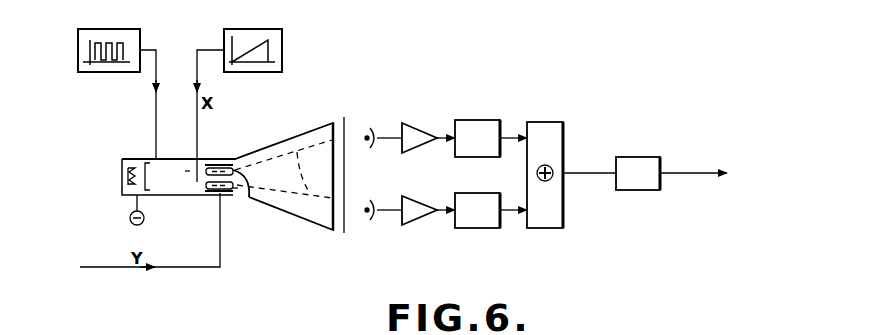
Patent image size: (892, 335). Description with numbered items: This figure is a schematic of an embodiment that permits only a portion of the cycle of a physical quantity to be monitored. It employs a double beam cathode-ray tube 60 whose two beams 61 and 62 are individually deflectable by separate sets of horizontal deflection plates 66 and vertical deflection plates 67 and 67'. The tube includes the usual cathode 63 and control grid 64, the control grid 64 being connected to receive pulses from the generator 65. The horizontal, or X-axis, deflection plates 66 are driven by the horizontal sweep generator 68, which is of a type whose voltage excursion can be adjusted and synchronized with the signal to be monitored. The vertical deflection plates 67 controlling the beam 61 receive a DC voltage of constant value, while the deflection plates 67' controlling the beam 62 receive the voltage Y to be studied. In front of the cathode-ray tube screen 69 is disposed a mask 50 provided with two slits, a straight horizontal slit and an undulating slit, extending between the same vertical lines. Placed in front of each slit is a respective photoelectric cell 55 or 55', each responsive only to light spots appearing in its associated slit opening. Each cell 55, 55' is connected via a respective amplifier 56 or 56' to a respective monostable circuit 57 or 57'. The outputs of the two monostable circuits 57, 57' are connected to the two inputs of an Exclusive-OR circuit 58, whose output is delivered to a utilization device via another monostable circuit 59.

The mask 50 is at (344, 138).
The photoelectric cell 55 is at (385, 122).
The photoelectric cell 55' is at (377, 226).
The amplifier 56 is at (491, 111).
The amplifier 56' is at (419, 242).
The monostable circuit 57 is at (439, 157).
The monostable circuit 57' is at (557, 231).
The Exclusive-OR circuit 58 is at (565, 129).
The monostable circuit 59 is at (630, 165).
The double beam cathode-ray tube 60 is at (267, 145).
The beam 61 is at (319, 162).
The beam 62 is at (291, 171).
The cathode 63 is at (133, 170).
The control grid 64 is at (148, 192).
The generator 65 is at (141, 47).
The horizontal deflection plates 66 is at (236, 193).
The vertical deflection plates 67 is at (226, 146).
The vertical deflection plates 67' is at (214, 204).
The horizontal sweep generator 68 is at (283, 45).
The cathode-ray tube screen 69 is at (335, 121).